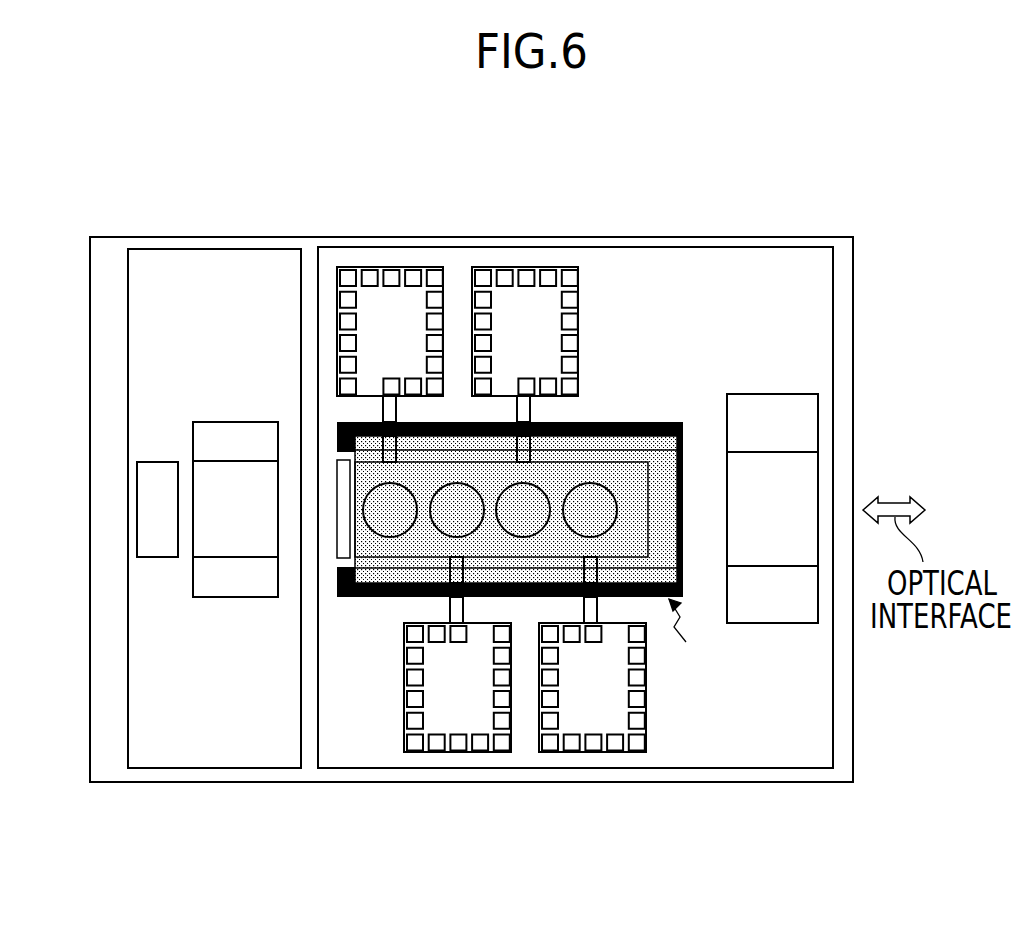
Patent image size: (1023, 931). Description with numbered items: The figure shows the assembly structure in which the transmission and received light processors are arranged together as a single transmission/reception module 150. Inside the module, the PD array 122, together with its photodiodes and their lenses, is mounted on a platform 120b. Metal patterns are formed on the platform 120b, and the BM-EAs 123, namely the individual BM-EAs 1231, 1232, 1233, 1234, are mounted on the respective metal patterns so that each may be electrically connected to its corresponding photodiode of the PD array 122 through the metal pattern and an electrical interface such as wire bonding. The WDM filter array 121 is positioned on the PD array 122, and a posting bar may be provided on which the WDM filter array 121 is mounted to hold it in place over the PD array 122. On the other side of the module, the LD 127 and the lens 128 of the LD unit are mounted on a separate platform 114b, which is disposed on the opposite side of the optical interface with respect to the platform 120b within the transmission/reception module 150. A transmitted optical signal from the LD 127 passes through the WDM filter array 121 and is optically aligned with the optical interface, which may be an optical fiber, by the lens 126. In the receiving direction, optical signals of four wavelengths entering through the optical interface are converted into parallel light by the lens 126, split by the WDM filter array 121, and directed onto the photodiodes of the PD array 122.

The transmission/reception module 150 is at (632, 236).
The platform 114b is at (218, 248).
The platform 120b is at (740, 246).
The WDM filter array 121 is at (627, 521).
The PD array 122 is at (648, 493).
The BM-EAs 123 is at (491, 512).
The BM-EA 1231 is at (591, 753).
The BM-EA 1232 is at (523, 266).
The BM-EA 1233 is at (456, 753).
The BM-EA 1234 is at (388, 266).
The lens 126 is at (772, 393).
The LD 127 is at (157, 461).
The lens 128 is at (234, 598).